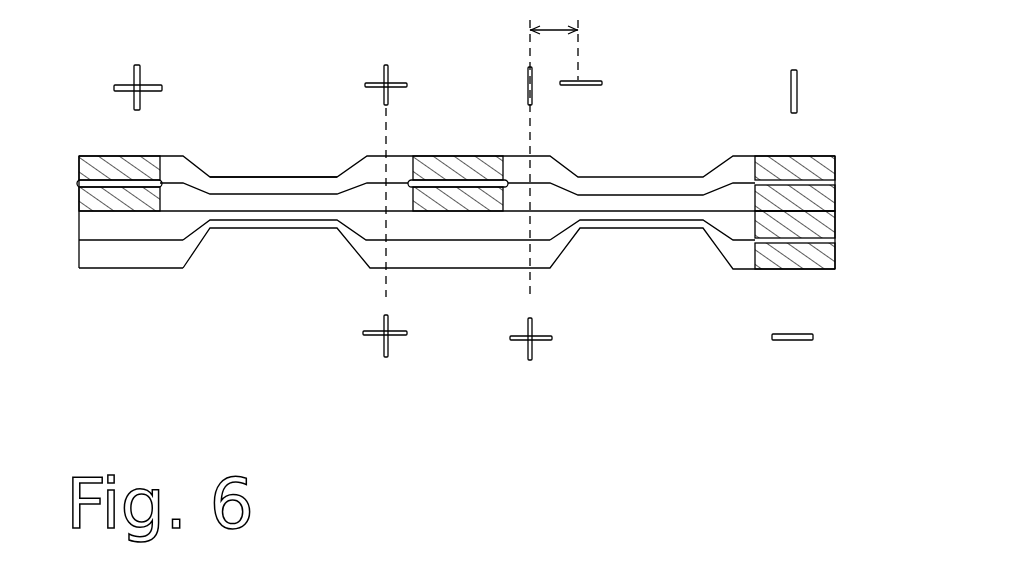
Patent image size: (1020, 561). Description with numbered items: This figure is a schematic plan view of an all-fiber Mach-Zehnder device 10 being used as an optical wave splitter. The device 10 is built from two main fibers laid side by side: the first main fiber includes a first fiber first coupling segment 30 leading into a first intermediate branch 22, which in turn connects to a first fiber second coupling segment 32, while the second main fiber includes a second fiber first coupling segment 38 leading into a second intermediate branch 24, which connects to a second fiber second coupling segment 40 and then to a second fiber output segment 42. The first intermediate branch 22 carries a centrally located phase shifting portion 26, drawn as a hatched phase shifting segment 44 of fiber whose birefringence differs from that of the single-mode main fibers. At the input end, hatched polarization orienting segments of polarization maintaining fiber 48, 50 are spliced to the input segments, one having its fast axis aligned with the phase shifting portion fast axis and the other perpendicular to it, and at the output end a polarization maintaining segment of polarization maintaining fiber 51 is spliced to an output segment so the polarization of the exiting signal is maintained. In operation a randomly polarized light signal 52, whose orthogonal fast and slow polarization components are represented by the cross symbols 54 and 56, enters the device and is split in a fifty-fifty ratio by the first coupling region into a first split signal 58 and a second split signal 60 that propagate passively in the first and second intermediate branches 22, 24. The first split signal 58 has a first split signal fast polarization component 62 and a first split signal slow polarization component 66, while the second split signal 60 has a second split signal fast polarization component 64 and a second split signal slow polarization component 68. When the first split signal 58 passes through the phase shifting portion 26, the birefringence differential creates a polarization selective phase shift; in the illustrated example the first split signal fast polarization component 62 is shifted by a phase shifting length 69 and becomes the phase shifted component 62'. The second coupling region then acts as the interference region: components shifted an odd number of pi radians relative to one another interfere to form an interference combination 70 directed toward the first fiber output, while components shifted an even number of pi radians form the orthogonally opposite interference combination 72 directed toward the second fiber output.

The Mach-Zehnder device 10 is at (722, 76).
The first intermediate branch 22 is at (380, 165).
The second intermediate branch 24 is at (508, 254).
The phase shifting portion 26 is at (512, 172).
The first fiber first coupling segment 30 is at (636, 180).
The first fiber second coupling segment 32 is at (270, 180).
The second fiber first coupling segment 38 is at (668, 228).
The second fiber second coupling segment 40 is at (280, 226).
The second fiber output segment 42 is at (140, 268).
The phase shifting segment 44 is at (470, 166).
The polarization orienting segment of polarization maintaining fiber 48 is at (784, 162).
The polarization orienting segment of polarization maintaining fiber 50 is at (786, 262).
The polarization maintaining segment of polarization maintaining fiber 51 is at (118, 156).
The randomly polarized light signal 52 is at (137, 89).
The fast polarization component 54 is at (148, 78).
The slow polarization component 56 is at (140, 100).
The first split signal 58 is at (461, 87).
The second split signal 60 is at (454, 351).
The first split signal fast polarization component 62 is at (413, 67).
The phase shifted first split signal slow polarization component 62' is at (618, 65).
The second split signal fast polarization component 64 is at (400, 322).
The first split signal slow polarization component 66 is at (390, 97).
The second split signal slow polarization component 68 is at (491, 347).
The phase shifting length 69 is at (556, 28).
The interference combination 70 is at (798, 90).
The orthogonally opposite interference combination 72 is at (796, 342).